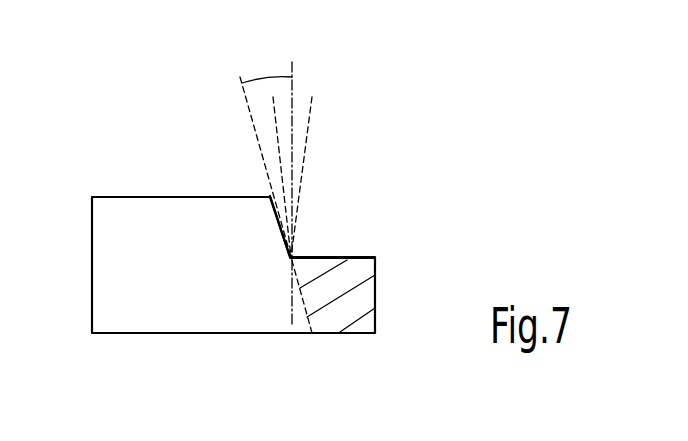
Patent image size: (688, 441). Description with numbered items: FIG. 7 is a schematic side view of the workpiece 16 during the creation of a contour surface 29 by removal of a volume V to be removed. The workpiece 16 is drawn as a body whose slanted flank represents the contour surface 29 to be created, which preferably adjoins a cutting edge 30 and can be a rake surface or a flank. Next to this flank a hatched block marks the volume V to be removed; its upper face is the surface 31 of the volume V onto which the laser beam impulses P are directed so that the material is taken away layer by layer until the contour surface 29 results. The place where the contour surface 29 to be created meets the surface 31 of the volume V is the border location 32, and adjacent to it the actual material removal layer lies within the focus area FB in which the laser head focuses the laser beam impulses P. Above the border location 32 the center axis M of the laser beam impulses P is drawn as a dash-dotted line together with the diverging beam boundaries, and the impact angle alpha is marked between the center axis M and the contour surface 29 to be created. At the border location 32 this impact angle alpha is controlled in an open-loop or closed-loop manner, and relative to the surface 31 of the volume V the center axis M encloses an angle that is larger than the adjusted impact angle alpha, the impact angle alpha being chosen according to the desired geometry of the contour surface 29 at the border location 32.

The workpiece 16 is at (108, 263).
The contour surface 29 is at (275, 205).
The cutting edge 30 is at (310, 333).
The surface of the volume to be removed 31 is at (373, 254).
The border location 32 is at (289, 259).
The volume to be removed V is at (363, 300).
The focus area FB is at (301, 249).
The impact angle alpha is at (273, 78).
The center axis M is at (293, 63).
The laser beam impulses P is at (312, 115).